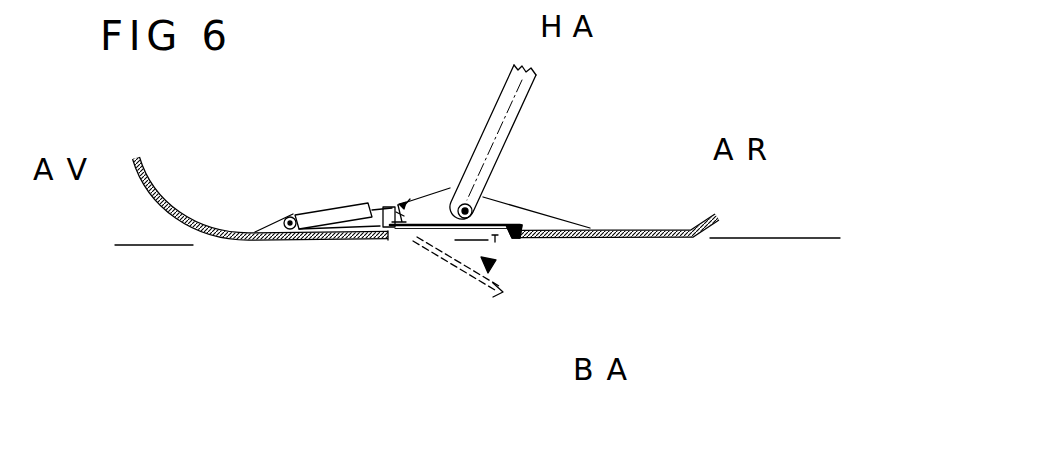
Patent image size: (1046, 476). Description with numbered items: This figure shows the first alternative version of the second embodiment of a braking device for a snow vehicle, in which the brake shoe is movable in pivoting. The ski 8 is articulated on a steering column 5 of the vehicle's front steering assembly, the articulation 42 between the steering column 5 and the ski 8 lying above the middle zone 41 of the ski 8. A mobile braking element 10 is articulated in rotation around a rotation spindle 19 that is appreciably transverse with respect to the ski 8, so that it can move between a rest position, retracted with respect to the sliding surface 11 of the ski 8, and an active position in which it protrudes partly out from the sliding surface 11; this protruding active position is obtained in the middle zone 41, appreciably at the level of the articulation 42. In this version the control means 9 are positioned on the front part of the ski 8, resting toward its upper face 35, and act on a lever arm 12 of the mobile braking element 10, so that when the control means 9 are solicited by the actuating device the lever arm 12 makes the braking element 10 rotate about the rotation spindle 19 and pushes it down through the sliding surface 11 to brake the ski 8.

The steering column 5 is at (492, 130).
The ski 8 is at (143, 211).
The control means 9 is at (331, 204).
The mobile braking element 10 is at (522, 223).
The sliding surface 11 is at (662, 241).
The lever arm 12 is at (397, 237).
The rotation spindle 19 is at (410, 240).
The upper face 35 is at (214, 225).
The middle zone 41 is at (530, 275).
The articulation 42 is at (453, 204).